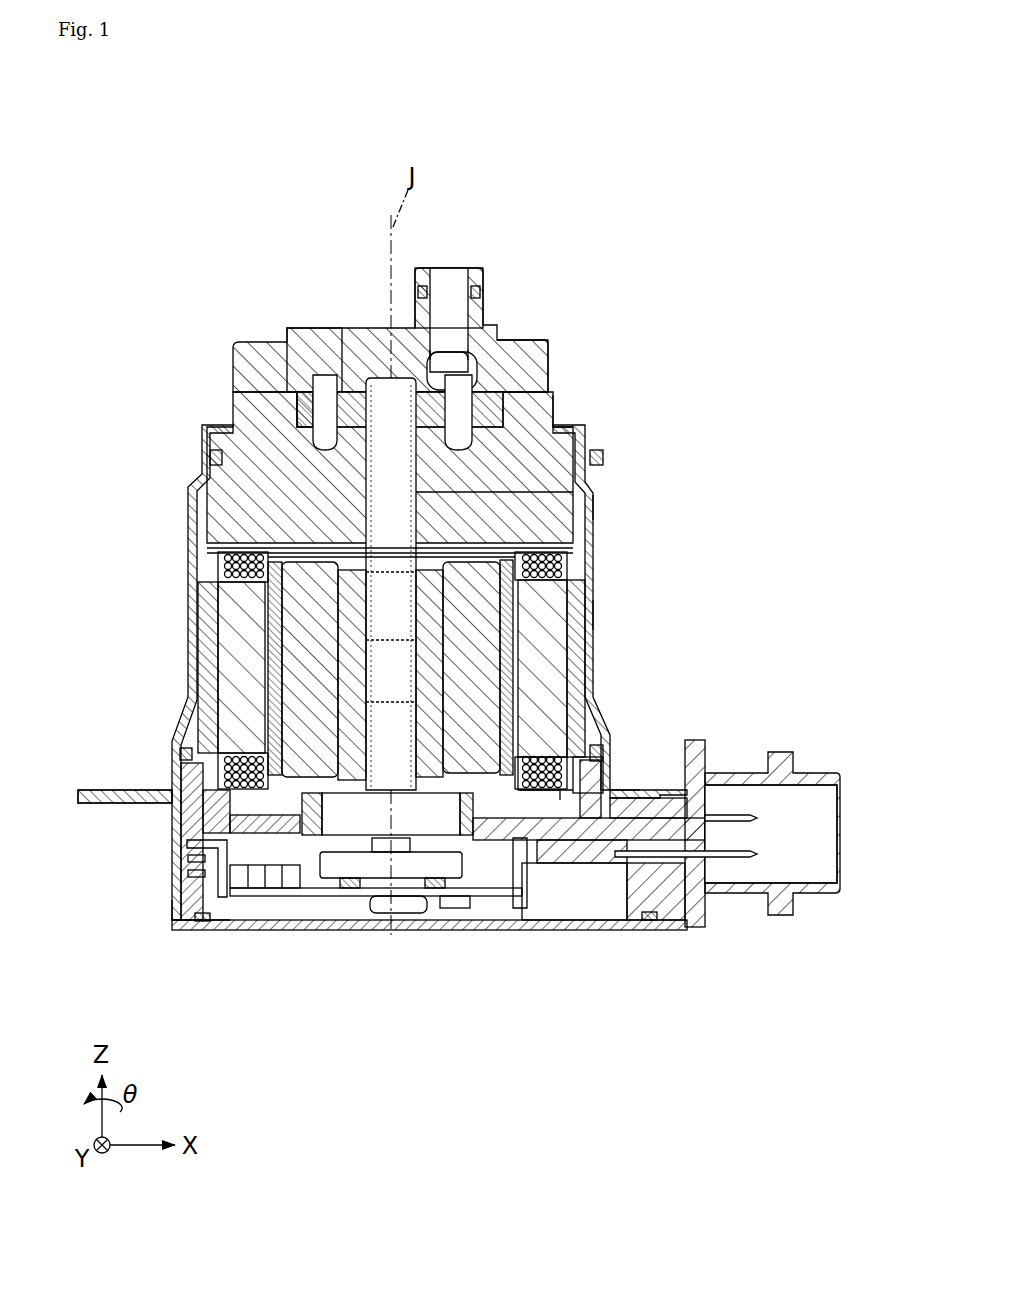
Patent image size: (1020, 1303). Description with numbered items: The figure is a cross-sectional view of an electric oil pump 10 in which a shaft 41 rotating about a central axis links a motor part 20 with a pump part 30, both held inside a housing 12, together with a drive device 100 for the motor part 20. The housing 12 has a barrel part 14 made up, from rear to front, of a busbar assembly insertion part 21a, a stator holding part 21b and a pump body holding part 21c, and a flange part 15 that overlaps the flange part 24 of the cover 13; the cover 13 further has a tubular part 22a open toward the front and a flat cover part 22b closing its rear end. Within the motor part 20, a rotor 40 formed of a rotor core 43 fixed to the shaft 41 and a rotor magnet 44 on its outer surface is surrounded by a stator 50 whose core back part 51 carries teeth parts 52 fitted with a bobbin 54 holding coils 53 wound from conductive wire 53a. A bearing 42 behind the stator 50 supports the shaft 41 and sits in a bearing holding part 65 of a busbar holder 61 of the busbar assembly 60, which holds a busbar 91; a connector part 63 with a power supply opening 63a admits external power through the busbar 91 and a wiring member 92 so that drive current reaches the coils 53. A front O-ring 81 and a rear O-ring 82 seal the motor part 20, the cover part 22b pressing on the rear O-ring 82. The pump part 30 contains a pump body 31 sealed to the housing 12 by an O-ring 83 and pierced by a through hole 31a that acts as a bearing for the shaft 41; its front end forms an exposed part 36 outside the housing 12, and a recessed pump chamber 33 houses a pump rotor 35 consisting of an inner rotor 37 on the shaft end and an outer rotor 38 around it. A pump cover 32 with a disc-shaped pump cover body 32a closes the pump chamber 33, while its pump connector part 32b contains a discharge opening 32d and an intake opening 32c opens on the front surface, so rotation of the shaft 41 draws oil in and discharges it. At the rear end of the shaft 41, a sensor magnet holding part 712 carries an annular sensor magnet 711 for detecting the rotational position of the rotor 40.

The electric oil pump 10 is at (668, 226).
The housing 12 is at (593, 462).
The cover 13 is at (185, 940).
The barrel part 14 is at (567, 598).
The flange part 15 is at (95, 790).
The motor part 20 is at (387, 825).
The busbar assembly insertion part 21a is at (612, 772).
The stator holding part 21b is at (595, 625).
The pump body holding part 21c is at (592, 520).
The tubular part 22a is at (172, 880).
The cover part 22b is at (265, 931).
The flange part 24 is at (95, 805).
The pump part 30 is at (165, 457).
The pump body 31 is at (572, 395).
The through hole 31a is at (405, 495).
The pump cover 32 is at (548, 325).
The pump cover body 32a is at (535, 362).
The pump connector part 32b is at (470, 267).
The intake opening 32c is at (313, 342).
The discharge opening 32d is at (455, 320).
The pump chamber 33 is at (505, 405).
The pump rotor 35 is at (309, 397).
The exposed part 36 is at (555, 412).
The inner rotor 37 is at (305, 400).
The outer rotor 38 is at (320, 415).
The rotor 40 is at (470, 668).
The shaft 41 is at (381, 400).
The bearing 42 is at (348, 820).
The rotor core 43 is at (492, 718).
The rotor magnet 44 is at (512, 658).
The stator 50 is at (416, 664).
The core back part 51 is at (210, 655).
The teeth parts 52 is at (236, 628).
The coils 53 is at (606, 760).
The conductive wire 53a is at (555, 795).
The bobbin 54 is at (545, 755).
The busbar assembly 60 is at (752, 826).
The busbar holder 61 is at (690, 937).
The connector part 63 is at (797, 802).
The power supply opening 63a is at (815, 880).
The bearing holding part 65 is at (468, 910).
The front O-ring 81 is at (183, 755).
The rear O-ring 82 is at (200, 922).
The O-ring 83 is at (603, 452).
The busbar 91 is at (727, 814).
The wiring member 92 is at (730, 859).
The drive device 100 is at (470, 838).
The sensor magnet 711 is at (368, 865).
The sensor magnet holding part 712 is at (400, 855).